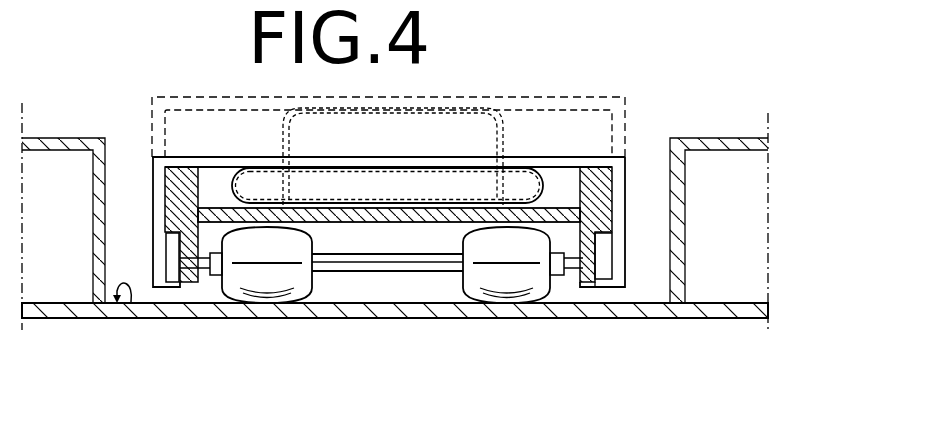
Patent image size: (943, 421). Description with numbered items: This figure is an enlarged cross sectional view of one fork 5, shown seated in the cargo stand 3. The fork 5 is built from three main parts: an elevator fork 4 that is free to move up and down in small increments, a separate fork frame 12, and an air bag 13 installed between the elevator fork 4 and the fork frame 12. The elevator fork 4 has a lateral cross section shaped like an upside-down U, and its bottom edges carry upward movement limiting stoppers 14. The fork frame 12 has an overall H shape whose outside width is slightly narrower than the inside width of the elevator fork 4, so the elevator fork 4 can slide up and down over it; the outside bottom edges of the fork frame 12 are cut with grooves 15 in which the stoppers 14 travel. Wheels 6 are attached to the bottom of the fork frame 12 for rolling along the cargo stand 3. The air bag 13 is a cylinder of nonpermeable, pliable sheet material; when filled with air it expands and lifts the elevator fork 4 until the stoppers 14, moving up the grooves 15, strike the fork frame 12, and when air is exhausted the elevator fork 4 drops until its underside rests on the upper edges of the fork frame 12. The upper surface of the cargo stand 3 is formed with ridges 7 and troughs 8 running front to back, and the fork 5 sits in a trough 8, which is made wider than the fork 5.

The cargo stand 3 is at (230, 312).
The elevator fork 4 is at (527, 157).
The fork 5 is at (555, 80).
The wheel 6 is at (291, 305).
The ridge 7 is at (55, 130).
The trough 8 is at (125, 320).
The fork frame 12 is at (409, 224).
The air bag 13 is at (262, 159).
The upward movement limiting stopper 14 is at (166, 288).
The groove 15 is at (612, 249).